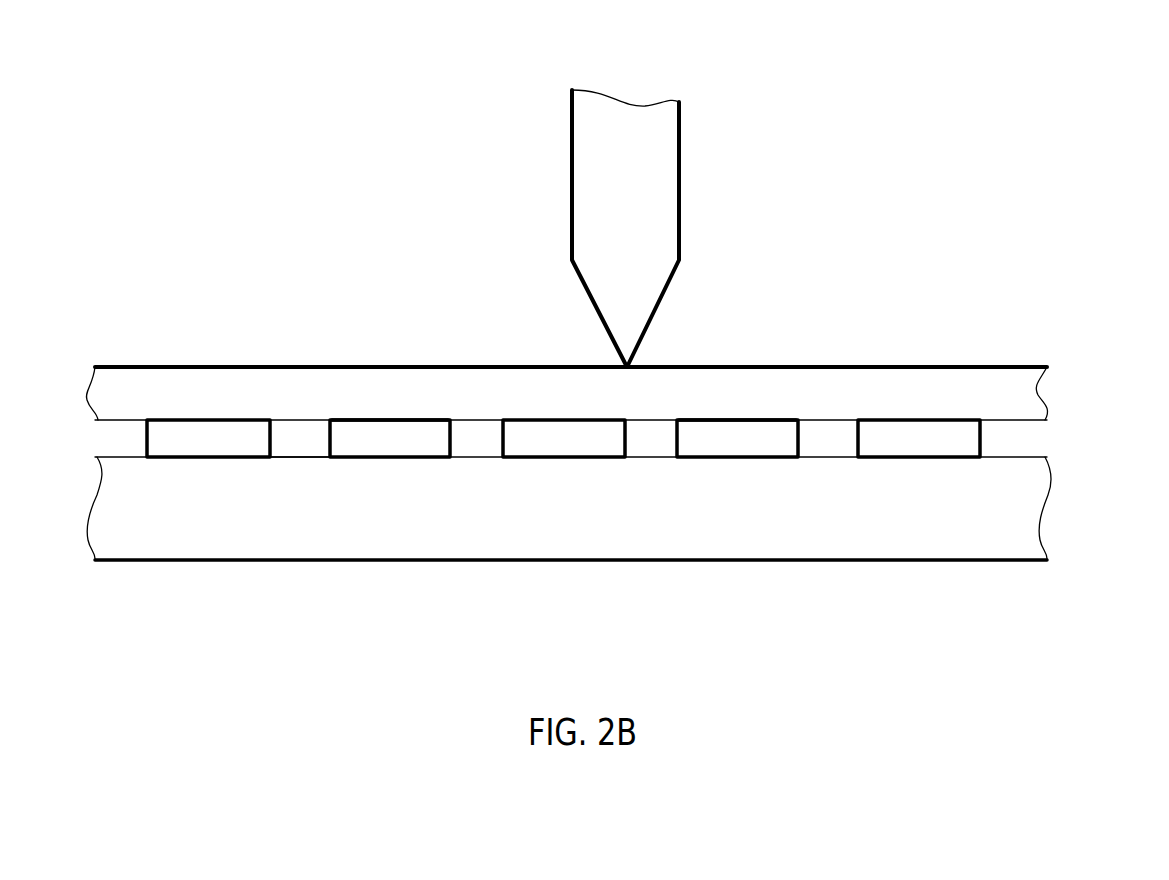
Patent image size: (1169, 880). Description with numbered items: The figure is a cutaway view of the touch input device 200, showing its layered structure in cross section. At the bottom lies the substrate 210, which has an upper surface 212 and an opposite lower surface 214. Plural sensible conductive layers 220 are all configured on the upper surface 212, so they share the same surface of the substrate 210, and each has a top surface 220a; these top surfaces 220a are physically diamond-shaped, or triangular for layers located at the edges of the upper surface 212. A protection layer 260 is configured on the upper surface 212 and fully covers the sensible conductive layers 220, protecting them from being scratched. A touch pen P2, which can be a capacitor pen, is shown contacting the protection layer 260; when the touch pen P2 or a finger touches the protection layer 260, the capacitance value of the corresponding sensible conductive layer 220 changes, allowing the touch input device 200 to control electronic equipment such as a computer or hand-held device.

The touch input device 200 is at (1034, 186).
The substrate 210 is at (569, 430).
The upper surface 212 is at (306, 455).
The lower surface 214 is at (405, 562).
The sensible conductive layer 220 is at (218, 435).
The top surface 220a is at (428, 418).
The protection layer 260 is at (1015, 400).
The touch pen P2 is at (662, 123).